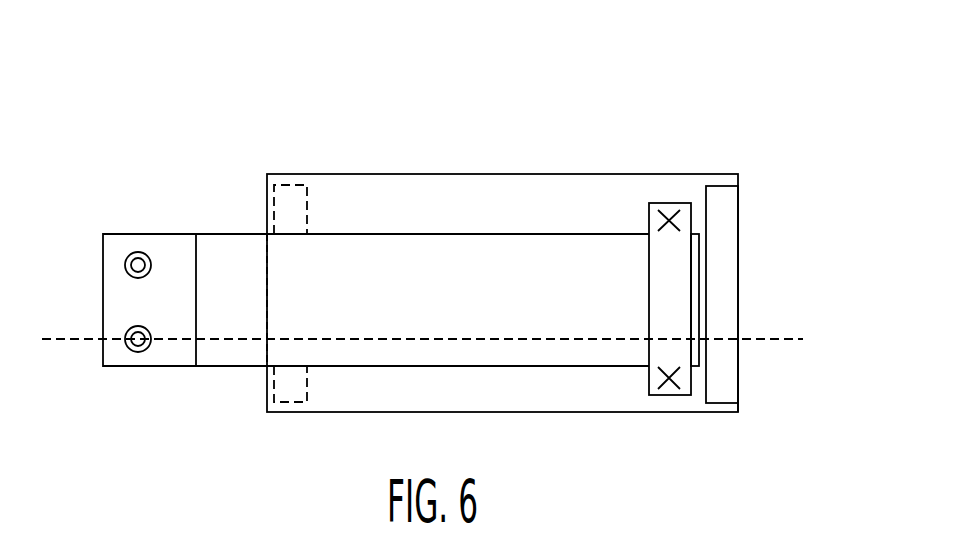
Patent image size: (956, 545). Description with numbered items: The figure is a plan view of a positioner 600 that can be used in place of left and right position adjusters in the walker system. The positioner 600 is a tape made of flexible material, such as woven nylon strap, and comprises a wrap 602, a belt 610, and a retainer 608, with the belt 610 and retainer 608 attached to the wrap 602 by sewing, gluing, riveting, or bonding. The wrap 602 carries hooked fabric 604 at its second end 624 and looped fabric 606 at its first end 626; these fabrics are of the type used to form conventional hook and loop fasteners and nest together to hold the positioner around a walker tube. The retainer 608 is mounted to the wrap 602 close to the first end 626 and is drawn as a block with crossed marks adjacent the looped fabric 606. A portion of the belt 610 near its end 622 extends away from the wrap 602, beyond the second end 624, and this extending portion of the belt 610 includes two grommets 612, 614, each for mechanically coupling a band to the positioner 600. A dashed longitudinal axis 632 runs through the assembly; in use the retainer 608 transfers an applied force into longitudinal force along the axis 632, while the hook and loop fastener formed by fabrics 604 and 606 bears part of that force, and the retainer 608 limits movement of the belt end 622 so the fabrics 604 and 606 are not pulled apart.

The positioner 600 is at (198, 125).
The wrap 602 is at (365, 173).
The hooked fabric 604 is at (283, 185).
The looped fabric 606 is at (722, 186).
The retainer 608 is at (669, 203).
The belt 610 is at (196, 233).
The grommet 612 is at (138, 353).
The grommet 614 is at (138, 252).
The end of belt 622 is at (103, 292).
The second end of wrap 624 is at (267, 392).
The first end of wrap 626 is at (738, 383).
The axis 632 is at (770, 337).